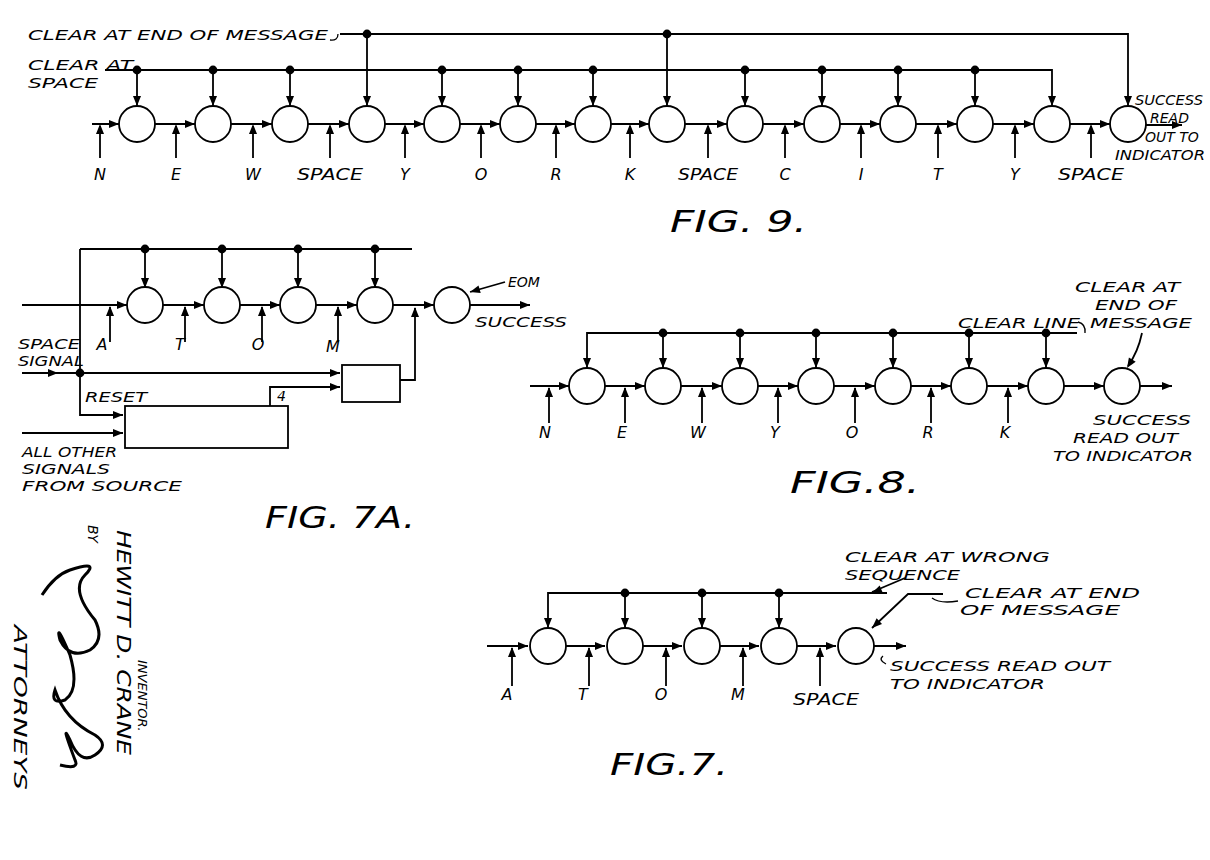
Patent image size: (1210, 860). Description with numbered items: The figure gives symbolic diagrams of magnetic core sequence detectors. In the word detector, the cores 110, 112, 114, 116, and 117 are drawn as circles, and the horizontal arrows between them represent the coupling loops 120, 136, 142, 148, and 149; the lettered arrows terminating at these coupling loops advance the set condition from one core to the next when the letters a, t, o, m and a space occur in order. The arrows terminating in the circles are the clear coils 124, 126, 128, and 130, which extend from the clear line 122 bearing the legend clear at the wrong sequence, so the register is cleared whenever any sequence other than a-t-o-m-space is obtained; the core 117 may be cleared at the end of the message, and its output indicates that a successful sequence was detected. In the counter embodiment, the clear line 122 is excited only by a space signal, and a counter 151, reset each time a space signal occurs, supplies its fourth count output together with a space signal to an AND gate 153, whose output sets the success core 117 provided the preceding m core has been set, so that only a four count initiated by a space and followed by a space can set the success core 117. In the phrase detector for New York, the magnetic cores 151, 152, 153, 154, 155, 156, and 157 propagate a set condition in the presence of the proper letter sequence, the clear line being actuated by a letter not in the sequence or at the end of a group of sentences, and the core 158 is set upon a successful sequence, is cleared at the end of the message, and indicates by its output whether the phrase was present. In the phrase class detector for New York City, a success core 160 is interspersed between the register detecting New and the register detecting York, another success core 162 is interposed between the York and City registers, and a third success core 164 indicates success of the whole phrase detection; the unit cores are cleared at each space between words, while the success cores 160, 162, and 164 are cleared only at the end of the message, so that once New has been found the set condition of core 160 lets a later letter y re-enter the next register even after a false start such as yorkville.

In FIG. 7A, the core 110 is at (151, 321).
In FIG. 7, the core 110 is at (551, 662).
In FIG. 7A, the core 112 is at (226, 321).
In FIG. 7, the core 112 is at (628, 662).
In FIG. 7A, the core 114 is at (302, 321).
In FIG. 7, the core 114 is at (705, 662).
In FIG. 7A, the core 116 is at (376, 321).
In FIG. 7, the core 116 is at (782, 662).
In FIG. 7A, the core 117 is at (456, 287).
In FIG. 7, the core 117 is at (855, 664).
In FIG. 7A, the coupling loop 120 is at (110, 302).
In FIG. 7, the coupling loop 120 is at (496, 640).
In FIG. 7, the clear line 122 is at (800, 583).
In FIG. 7, the clear coil 124 is at (546, 595).
In FIG. 7, the clear coil 126 is at (620, 593).
In FIG. 7, the clear coil 128 is at (698, 593).
In FIG. 7, the clear coil 130 is at (781, 607).
In FIG. 7A, the coupling loop 136 is at (170, 302).
In FIG. 7, the coupling loop 136 is at (578, 626).
In FIG. 7A, the coupling loop 142 is at (247, 302).
In FIG. 7, the coupling loop 142 is at (655, 626).
In FIG. 7A, the coupling loop 148 is at (323, 302).
In FIG. 7, the coupling loop 148 is at (717, 636).
In FIG. 7A, the coupling loop 149 is at (401, 302).
In FIG. 7, the coupling loop 149 is at (810, 645).
In FIG. 7A, the counter 151 is at (240, 449).
In FIG. 8, the counter 151 is at (616, 366).
In FIG. 8, the magnetic core 152 is at (694, 364).
In FIG. 7A, the AND gate 153 is at (392, 403).
In FIG. 8, the AND gate 153 is at (770, 364).
In FIG. 8, the magnetic core 154 is at (845, 364).
In FIG. 8, the magnetic core 155 is at (922, 365).
In FIG. 8, the magnetic core 156 is at (1000, 365).
In FIG. 8, the magnetic core 157 is at (1078, 365).
In FIG. 8, the core 158 is at (1135, 374).
In FIG. 9, the success core 160 is at (380, 108).
In FIG. 9, the success core 162 is at (683, 109).
In FIG. 9, the success core 164 is at (1112, 109).